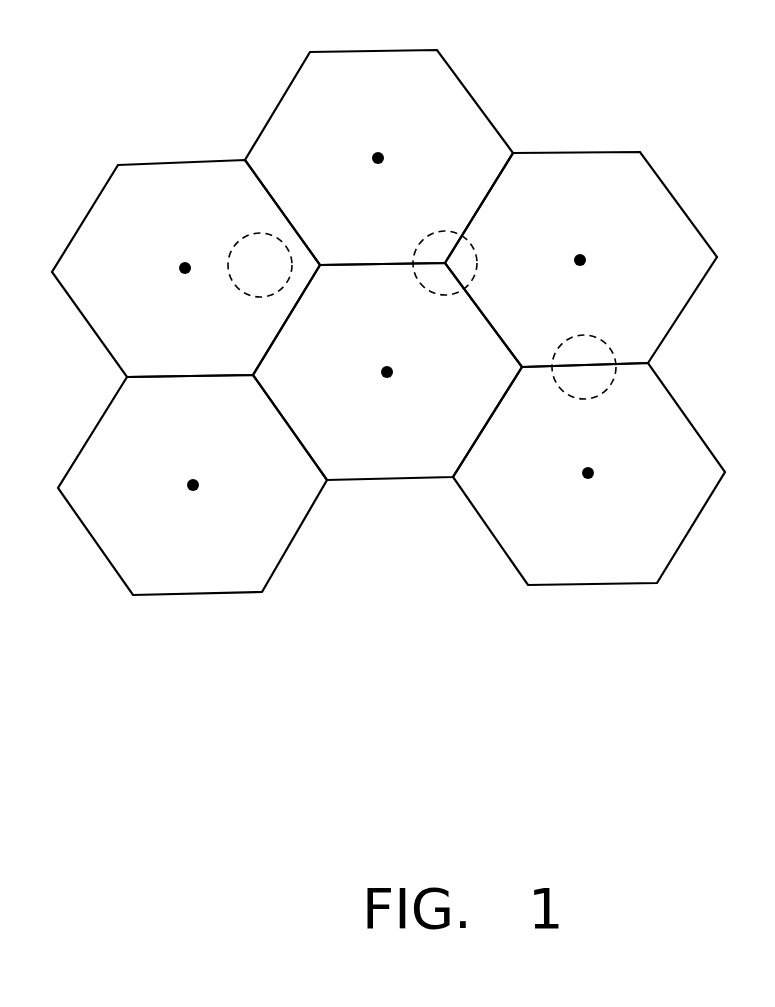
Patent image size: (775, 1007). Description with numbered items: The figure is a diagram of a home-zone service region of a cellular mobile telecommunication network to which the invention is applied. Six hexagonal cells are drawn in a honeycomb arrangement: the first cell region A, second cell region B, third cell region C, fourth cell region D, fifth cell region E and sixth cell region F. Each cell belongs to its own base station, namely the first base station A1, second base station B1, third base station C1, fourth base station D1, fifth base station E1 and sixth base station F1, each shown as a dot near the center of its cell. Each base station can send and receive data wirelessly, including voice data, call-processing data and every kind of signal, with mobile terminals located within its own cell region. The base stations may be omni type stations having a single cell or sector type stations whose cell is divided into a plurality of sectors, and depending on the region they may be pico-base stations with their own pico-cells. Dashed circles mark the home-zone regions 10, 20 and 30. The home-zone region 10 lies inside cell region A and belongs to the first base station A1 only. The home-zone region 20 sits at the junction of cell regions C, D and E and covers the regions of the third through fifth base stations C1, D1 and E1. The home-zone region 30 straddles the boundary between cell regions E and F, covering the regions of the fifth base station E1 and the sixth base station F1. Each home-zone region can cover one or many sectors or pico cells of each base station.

The first cell region A is at (136, 162).
The second cell region B is at (76, 457).
The third cell region C is at (390, 480).
The fourth cell region D is at (470, 90).
The fifth cell region E is at (575, 152).
The sixth cell region F is at (697, 427).
The first base station A1 is at (185, 262).
The second base station B1 is at (192, 479).
The third base station C1 is at (385, 366).
The fourth base station D1 is at (377, 152).
The fifth base station E1 is at (579, 254).
The sixth base station F1 is at (587, 467).
The home-zone region 10 is at (260, 298).
The home-zone region 20 is at (444, 231).
The home-zone region 30 is at (584, 334).